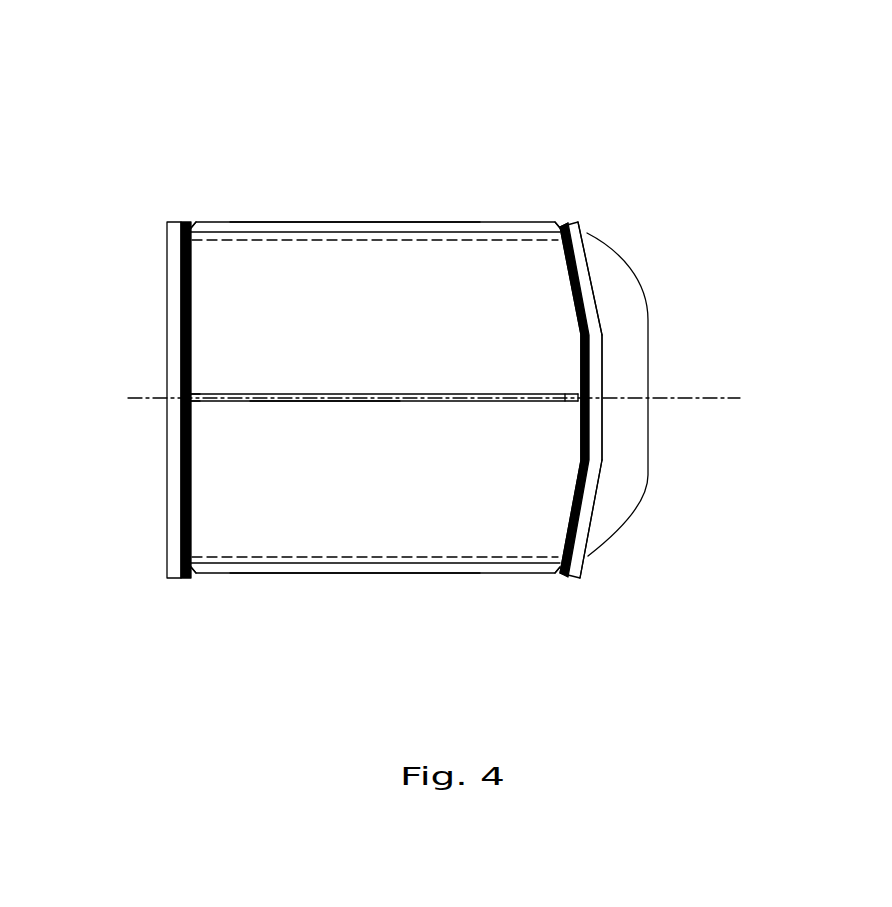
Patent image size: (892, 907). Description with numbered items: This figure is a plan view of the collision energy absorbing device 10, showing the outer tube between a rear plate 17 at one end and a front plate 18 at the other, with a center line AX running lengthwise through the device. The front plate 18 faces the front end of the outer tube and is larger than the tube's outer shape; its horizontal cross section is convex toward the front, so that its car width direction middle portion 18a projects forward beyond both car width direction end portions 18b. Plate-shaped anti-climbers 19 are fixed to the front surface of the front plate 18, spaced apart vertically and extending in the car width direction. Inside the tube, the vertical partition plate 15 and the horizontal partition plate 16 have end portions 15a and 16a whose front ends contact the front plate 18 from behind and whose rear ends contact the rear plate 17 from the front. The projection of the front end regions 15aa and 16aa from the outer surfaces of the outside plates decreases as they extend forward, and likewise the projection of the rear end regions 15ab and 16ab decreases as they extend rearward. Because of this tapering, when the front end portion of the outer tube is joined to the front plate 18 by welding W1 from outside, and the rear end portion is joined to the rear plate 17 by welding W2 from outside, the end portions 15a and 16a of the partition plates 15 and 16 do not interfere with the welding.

The collision energy absorbing device 10 is at (304, 158).
The vertical partition plate 15 is at (232, 405).
The end portion of the vertical partition plate 15a is at (330, 405).
The rear end region of the end portion 15ab is at (195, 393).
The front end region of the end portion 15aa is at (578, 410).
The horizontal partition plate 16 is at (427, 216).
The end portion of the horizontal partition plate 16a is at (362, 222).
The rear end region of the end portion 16ab is at (192, 222).
The front end region of the end portion 16aa is at (555, 225).
The rear plate 17 is at (167, 292).
The front plate 18 is at (588, 288).
The car width direction middle portion 18a is at (603, 418).
The car width direction end portions 18b is at (585, 237).
The anti-climber 19 is at (640, 318).
The welding W1 is at (563, 226).
The welding W2 is at (185, 222).
The axis AX is at (708, 398).